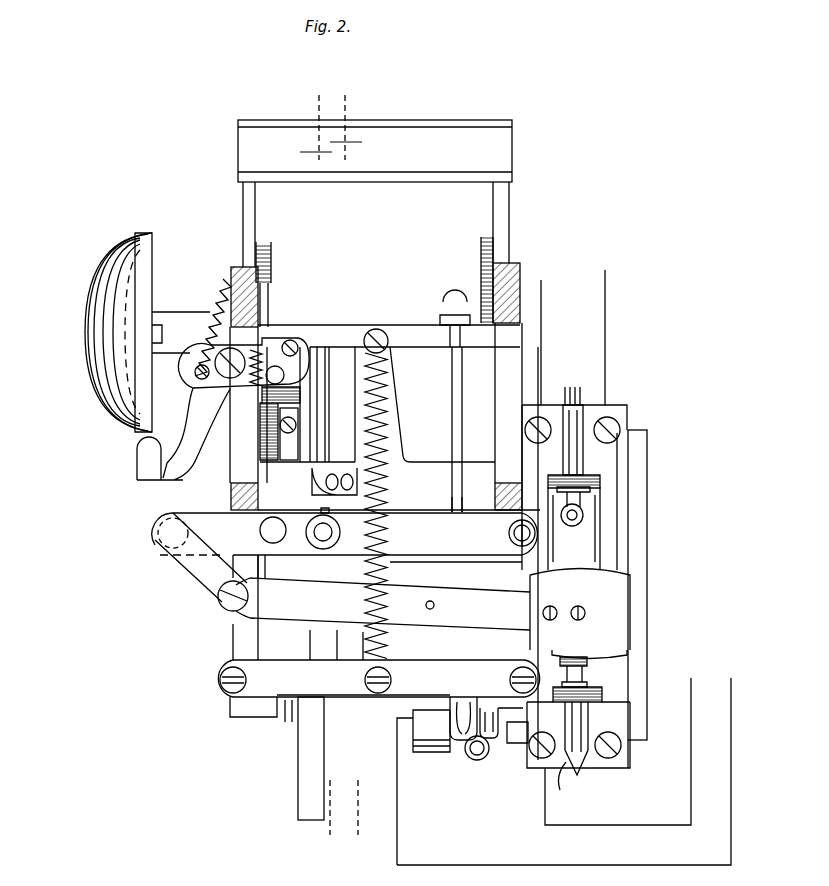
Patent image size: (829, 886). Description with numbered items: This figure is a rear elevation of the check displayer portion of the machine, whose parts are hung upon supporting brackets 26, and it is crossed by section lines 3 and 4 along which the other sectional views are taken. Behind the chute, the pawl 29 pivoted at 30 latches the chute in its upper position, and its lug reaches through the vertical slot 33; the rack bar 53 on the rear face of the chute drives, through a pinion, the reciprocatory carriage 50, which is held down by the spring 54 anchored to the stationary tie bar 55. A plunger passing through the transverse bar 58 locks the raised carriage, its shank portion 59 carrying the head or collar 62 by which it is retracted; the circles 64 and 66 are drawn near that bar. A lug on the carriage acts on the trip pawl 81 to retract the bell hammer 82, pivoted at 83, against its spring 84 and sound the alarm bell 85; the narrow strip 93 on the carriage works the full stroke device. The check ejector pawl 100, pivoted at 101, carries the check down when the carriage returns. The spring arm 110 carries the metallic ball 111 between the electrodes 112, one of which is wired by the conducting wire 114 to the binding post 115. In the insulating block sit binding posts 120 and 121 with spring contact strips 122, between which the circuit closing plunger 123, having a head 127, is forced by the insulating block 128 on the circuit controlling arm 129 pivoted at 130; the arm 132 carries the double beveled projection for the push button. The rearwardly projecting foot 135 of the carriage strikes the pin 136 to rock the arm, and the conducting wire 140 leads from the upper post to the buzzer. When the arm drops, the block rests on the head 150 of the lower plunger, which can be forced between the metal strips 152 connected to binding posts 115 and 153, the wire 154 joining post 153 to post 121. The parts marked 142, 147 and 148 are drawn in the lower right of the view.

The section line 3— 3 is at (331, 464).
The section line 4— 4 is at (349, 464).
The supporting brackets 26 is at (240, 268).
The spring 84 is at (212, 332).
The trip pawl 81 is at (303, 330).
The vertical slot 33 is at (330, 332).
The pivot of bell hammer 83 is at (195, 378).
The alarm bell 85 is at (105, 385).
The bell hammer 82 is at (195, 472).
The pawl 29 is at (306, 427).
The pivot of pawl 30 is at (325, 466).
The rack bar 53 is at (278, 458).
The hole 64 is at (273, 525).
The bar 66 is at (235, 533).
The head or collar 62 is at (310, 540).
The shank portion 59 is at (325, 540).
The pivot of check ejector pawl 101 is at (452, 387).
The check ejector pawl 100 is at (462, 507).
The spring 54 is at (385, 512).
The reciprocatory frame or carriage 50 is at (392, 442).
The transverse bar 58 is at (345, 543).
The pin 136 is at (430, 601).
The circuit controlling arm 129 is at (440, 620).
The arm 132 is at (195, 572).
The pivot of circuit controlling arm 130 is at (228, 606).
The stationary tie bar 55 is at (395, 688).
The narrow strip 93 is at (305, 748).
The bushing 142 is at (470, 708).
The rearwardly projecting foot 135 is at (418, 750).
The conducting wire 114 is at (477, 760).
The metallic electrodes 112 is at (510, 745).
The binding post 115 is at (538, 760).
The wire 154 is at (560, 790).
The metal strips 152 is at (583, 785).
The housing 148 is at (618, 751).
The binding post 153 is at (625, 752).
The casing 147 is at (572, 865).
The head 150 is at (576, 660).
The insulating block 128 is at (580, 608).
The conducting wire 140 is at (642, 556).
The head 127 is at (575, 530).
The circuit closing plunger 123 is at (548, 447).
The binding post 120 is at (538, 425).
The spring contact strips 122 is at (572, 393).
The binding post 121 is at (610, 428).
The spring arm 110 is at (541, 292).
The metallic ball 111 is at (606, 300).